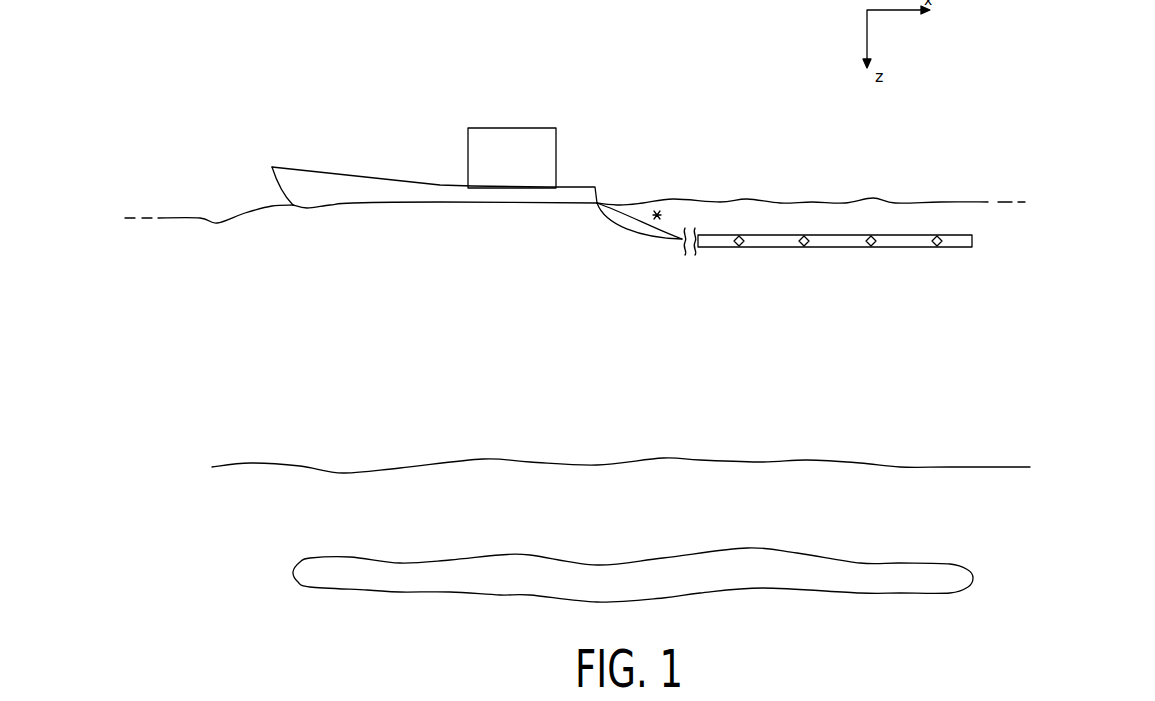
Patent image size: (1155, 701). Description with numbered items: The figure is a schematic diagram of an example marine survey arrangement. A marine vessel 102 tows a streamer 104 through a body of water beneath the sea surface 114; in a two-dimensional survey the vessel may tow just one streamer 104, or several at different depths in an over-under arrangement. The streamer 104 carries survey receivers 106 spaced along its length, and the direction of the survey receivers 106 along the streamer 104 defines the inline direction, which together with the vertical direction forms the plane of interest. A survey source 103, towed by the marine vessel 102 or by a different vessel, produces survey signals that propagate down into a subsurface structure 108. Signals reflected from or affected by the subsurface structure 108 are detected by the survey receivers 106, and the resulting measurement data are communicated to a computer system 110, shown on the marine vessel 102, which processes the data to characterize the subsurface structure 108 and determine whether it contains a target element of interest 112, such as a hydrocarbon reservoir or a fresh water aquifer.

The marine vessel 102 is at (338, 175).
The survey source 103 is at (662, 218).
The streamer 104 is at (763, 235).
The survey receivers 106 is at (937, 247).
The subsurface structure 108 is at (1057, 440).
The computer system 110 is at (510, 128).
The target element of interest 112 is at (712, 590).
The sea surface 114 is at (812, 203).